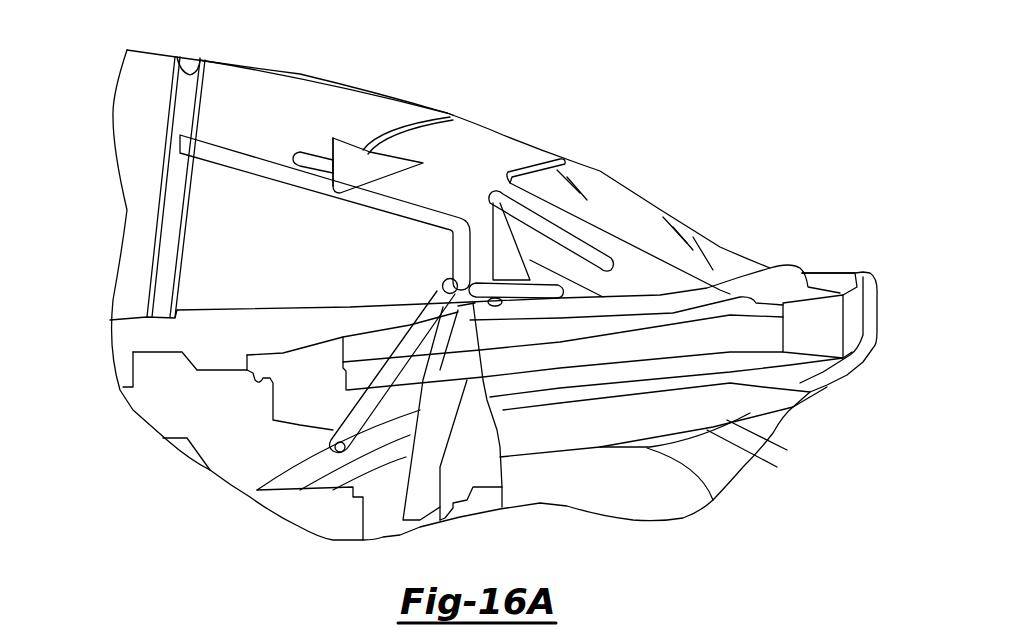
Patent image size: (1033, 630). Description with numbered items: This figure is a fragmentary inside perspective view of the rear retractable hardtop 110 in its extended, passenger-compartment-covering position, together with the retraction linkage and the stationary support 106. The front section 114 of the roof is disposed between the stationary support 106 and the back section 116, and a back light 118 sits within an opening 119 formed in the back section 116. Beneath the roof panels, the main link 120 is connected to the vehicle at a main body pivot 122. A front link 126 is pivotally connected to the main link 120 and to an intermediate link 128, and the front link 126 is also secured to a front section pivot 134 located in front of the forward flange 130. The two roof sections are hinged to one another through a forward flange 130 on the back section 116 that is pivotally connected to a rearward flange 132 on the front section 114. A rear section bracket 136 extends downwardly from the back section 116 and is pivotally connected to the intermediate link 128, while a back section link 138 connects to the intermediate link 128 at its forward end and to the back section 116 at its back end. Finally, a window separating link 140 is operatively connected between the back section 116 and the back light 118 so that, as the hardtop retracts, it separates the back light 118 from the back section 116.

The stationary support 106 is at (125, 117).
The rear retractable hardtop 110 is at (92, 70).
The front section 114 is at (233, 72).
The back section 116 is at (503, 135).
The back light 118 is at (643, 200).
The opening 119 is at (553, 162).
The main link 120 is at (428, 312).
The main body pivot 122 is at (335, 442).
The front link 126 is at (398, 193).
The intermediate link 128 is at (438, 287).
The forward flange 130 is at (400, 165).
The rearward flange 132 is at (330, 148).
The front section pivot 134 is at (308, 165).
The rear section bracket 136 is at (497, 200).
The back section link 138 is at (562, 292).
The window separating link 140 is at (567, 247).